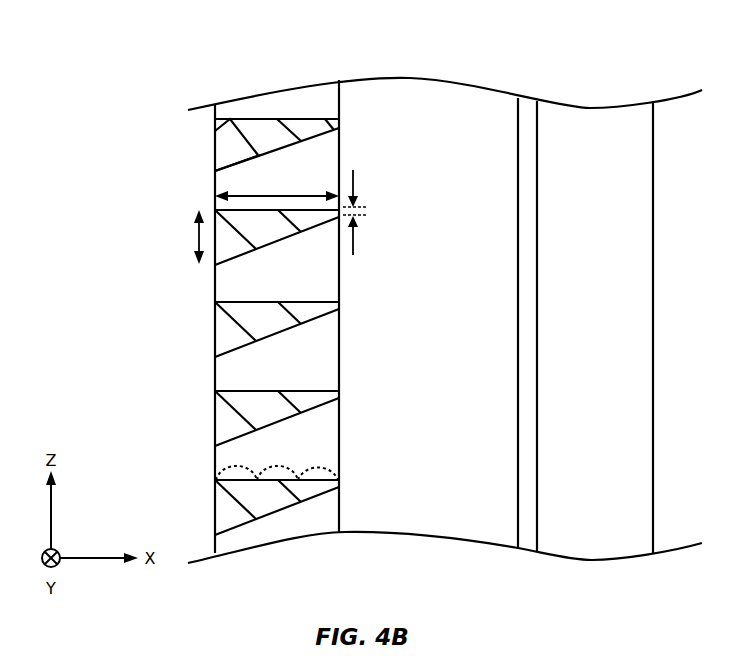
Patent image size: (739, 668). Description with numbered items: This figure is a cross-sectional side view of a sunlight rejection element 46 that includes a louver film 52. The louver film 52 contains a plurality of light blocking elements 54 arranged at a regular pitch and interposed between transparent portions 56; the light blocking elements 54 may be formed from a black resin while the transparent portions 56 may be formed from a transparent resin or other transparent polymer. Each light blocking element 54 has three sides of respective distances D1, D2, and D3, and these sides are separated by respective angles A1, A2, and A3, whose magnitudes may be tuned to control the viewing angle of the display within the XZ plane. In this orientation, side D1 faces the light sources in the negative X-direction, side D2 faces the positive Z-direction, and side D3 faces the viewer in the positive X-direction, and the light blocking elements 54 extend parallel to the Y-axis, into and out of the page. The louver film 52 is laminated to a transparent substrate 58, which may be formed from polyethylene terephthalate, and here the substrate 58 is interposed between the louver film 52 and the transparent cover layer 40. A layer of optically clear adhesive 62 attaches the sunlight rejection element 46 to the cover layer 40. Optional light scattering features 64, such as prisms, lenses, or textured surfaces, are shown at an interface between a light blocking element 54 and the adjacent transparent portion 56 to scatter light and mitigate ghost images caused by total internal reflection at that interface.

The transparent cover layer 40 is at (595, 115).
The sunlight rejection element 46 is at (500, 60).
The louver film 52 is at (215, 565).
The light blocking elements 54 is at (222, 432).
The transparent portions 56 is at (222, 280).
The transparent substrate 58 is at (420, 532).
The optically clear adhesive 62 is at (530, 548).
The light scattering features 64 is at (316, 463).
The angle A1 is at (221, 164).
The angle A2 is at (228, 120).
The angle A3 is at (325, 118).
The side D1 is at (199, 237).
The side D2 is at (290, 194).
The side D3 is at (353, 180).